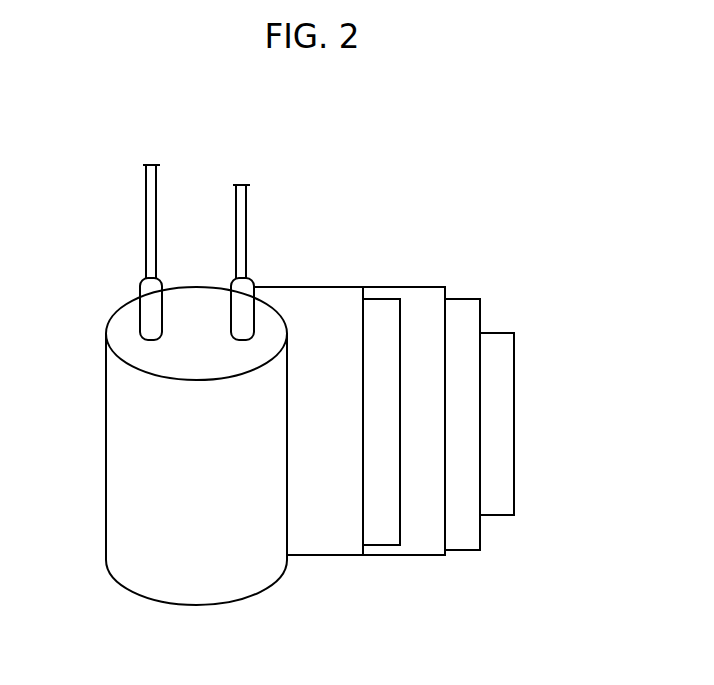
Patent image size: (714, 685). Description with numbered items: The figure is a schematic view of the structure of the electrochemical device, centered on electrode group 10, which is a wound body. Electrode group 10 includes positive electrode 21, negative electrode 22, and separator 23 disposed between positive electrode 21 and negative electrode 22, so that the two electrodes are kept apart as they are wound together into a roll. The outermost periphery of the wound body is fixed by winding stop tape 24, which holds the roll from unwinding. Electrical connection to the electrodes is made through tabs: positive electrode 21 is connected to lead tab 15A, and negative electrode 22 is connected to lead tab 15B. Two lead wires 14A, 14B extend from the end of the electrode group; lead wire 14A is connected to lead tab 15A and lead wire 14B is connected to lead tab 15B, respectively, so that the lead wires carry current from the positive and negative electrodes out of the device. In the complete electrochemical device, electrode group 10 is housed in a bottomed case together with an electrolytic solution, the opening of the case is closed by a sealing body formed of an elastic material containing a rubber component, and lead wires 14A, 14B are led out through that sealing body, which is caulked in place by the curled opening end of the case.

The electrode group 10 is at (361, 172).
The lead wire 14A is at (146, 198).
The lead wire 14B is at (247, 192).
The lead tab 15A is at (150, 297).
The lead tab 15B is at (247, 297).
The positive electrode 21 is at (390, 528).
The negative electrode 22 is at (465, 540).
The separator 23 is at (335, 528).
The winding stop tape 24 is at (497, 505).